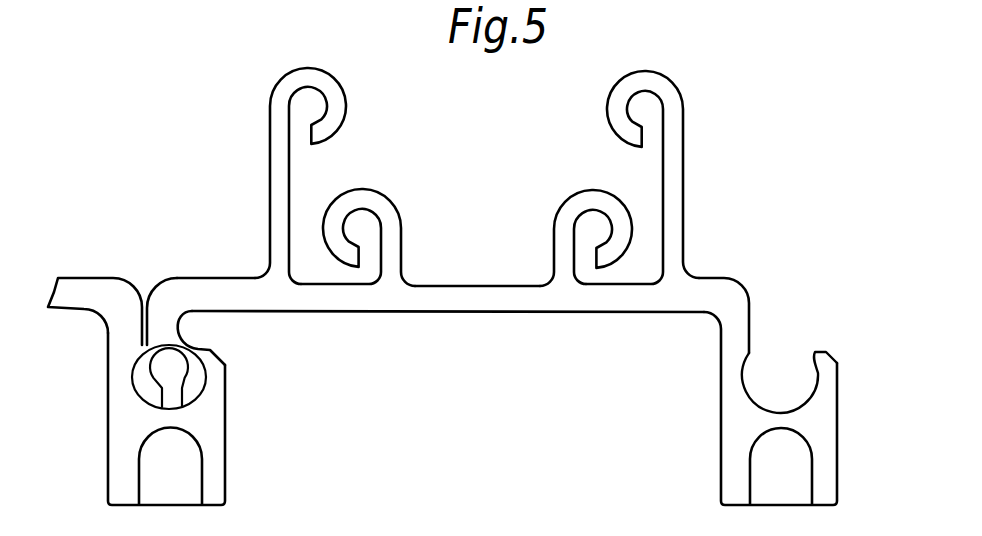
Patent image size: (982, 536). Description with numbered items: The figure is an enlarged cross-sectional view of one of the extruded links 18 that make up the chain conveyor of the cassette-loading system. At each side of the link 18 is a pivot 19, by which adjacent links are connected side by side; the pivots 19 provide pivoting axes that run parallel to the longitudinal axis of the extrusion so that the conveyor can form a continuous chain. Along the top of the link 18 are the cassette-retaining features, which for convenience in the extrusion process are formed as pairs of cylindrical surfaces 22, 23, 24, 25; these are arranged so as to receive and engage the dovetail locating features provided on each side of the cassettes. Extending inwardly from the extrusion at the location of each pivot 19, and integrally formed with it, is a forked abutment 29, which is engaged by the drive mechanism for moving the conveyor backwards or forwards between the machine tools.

The extruded link 18 is at (482, 326).
The pivot 19 is at (150, 373).
The cylindrical surface 22 is at (336, 98).
The cylindrical surface 23 is at (618, 93).
The cylindrical surface 24 is at (380, 205).
The cylindrical surface 25 is at (575, 202).
The forked abutment 29 is at (122, 460).